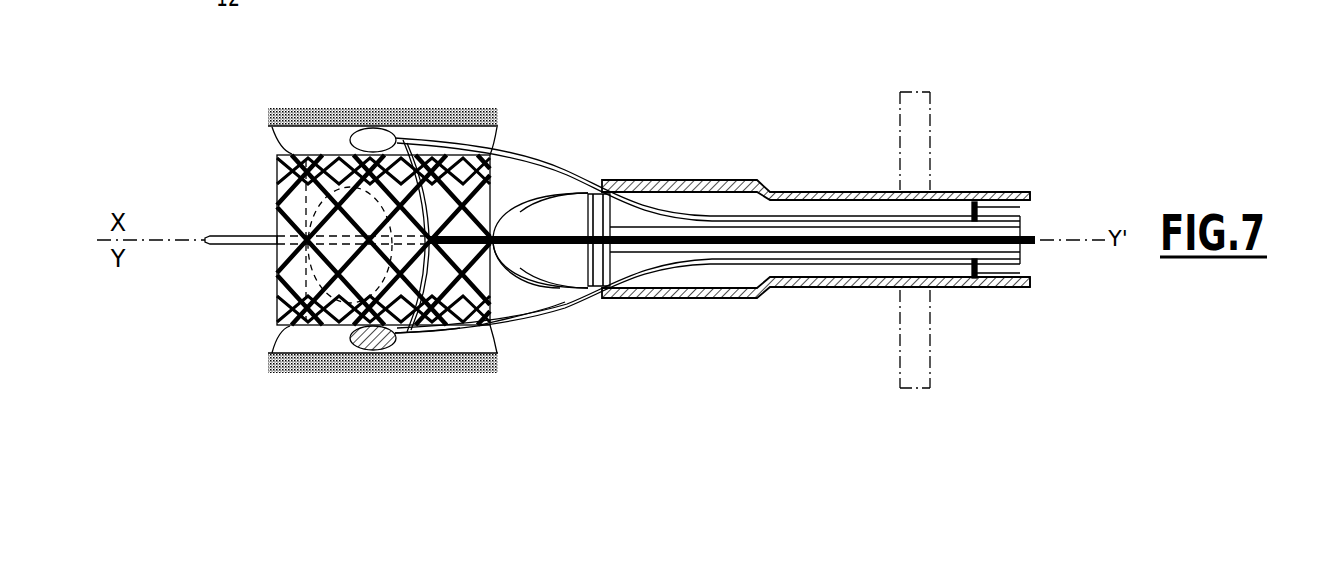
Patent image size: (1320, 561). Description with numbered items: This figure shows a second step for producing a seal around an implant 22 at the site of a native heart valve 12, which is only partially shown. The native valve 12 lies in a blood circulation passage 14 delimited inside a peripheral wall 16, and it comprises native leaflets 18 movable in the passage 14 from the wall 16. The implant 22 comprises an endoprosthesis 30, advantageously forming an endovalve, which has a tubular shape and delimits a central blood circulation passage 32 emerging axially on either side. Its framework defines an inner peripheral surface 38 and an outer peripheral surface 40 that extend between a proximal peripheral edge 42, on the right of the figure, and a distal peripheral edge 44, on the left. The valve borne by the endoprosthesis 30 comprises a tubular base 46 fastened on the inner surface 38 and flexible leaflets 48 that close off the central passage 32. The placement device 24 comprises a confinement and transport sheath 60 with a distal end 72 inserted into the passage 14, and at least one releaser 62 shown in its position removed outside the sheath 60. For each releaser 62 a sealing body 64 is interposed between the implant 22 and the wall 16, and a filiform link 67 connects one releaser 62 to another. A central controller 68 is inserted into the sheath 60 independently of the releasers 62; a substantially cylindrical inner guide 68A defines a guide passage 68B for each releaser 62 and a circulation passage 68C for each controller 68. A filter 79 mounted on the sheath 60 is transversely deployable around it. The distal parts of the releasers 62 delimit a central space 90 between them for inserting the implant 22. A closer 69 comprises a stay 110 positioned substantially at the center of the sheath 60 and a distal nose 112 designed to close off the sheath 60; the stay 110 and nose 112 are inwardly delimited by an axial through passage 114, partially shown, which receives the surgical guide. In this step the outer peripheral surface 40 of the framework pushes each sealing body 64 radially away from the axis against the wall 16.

The native heart valve 12 is at (290, 392).
The blood circulation passage 14 is at (507, 293).
The peripheral wall 16 is at (433, 128).
The native leaflets 18 is at (310, 140).
The implant 22 is at (323, 354).
The placement device 24 is at (795, 123).
The endoprosthesis 30 is at (463, 327).
The central blood circulation passage 32 is at (277, 236).
The inner peripheral surface 38 is at (520, 152).
The outer peripheral surface 40 is at (413, 150).
The proximal peripheral edge 42 is at (545, 190).
The distal peripheral edge 44 is at (277, 198).
The tubular base 46 is at (313, 266).
The flexible leaflets 48 is at (273, 307).
The confinement and transport sheath 60 is at (978, 183).
The releaser 62 is at (722, 205).
The sealing body 64 is at (370, 138).
The filiform link 67 is at (423, 327).
The central controller 68 is at (793, 262).
The inner guide 68A is at (966, 277).
The guide passage 68B is at (1003, 290).
The circulation passage 68C is at (968, 212).
The closer 69 is at (530, 293).
The distal end 72 is at (598, 193).
The filter 79 is at (900, 330).
The central space 90 is at (556, 222).
The stay 110 is at (818, 233).
The distal nose 112 is at (545, 260).
The axial through passage 114 is at (543, 190).